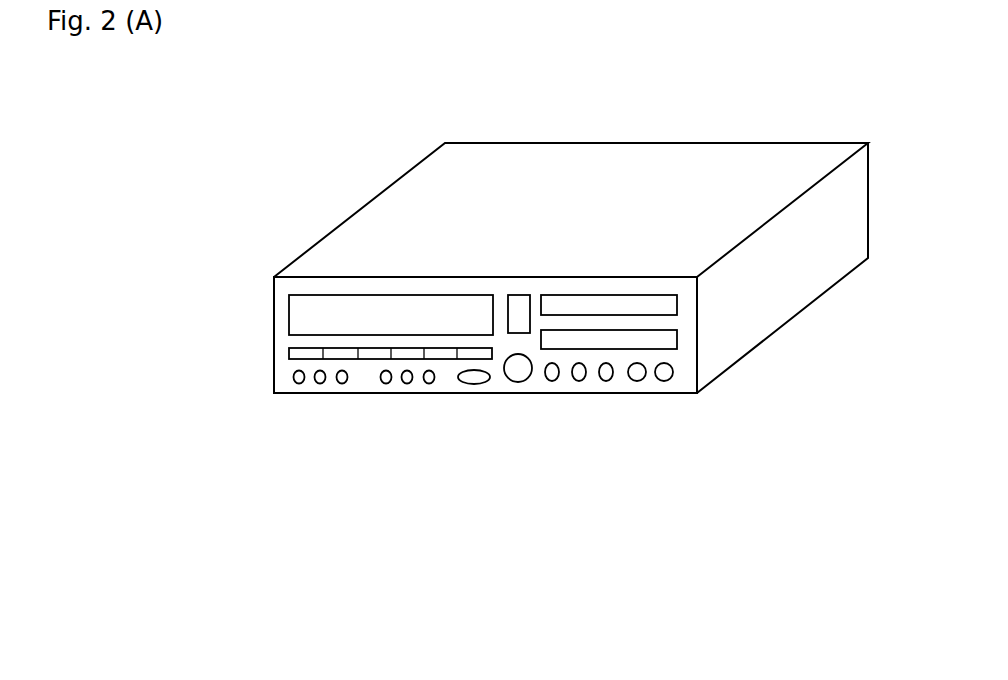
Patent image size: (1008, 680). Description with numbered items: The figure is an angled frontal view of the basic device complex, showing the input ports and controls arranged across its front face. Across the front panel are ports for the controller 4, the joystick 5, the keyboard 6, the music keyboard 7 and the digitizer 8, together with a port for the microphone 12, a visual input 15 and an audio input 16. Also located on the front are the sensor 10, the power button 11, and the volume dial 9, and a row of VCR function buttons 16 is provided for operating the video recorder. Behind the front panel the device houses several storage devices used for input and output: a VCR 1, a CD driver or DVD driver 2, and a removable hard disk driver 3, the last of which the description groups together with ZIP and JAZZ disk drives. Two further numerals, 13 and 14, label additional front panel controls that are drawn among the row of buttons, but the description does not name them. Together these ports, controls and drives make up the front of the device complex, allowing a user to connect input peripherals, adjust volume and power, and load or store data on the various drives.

The VCR 1 is at (487, 264).
The CD driver or DVD driver 2 is at (608, 303).
The removable hard disk driver 3 is at (630, 340).
The controller port 4 is at (672, 378).
The joystick port 5 is at (644, 379).
The keyboard port 6 is at (607, 380).
The music keyboard port 7 is at (583, 395).
The digitizer port 8 is at (552, 400).
The volume dial 9 is at (519, 400).
The sensor 10 is at (310, 307).
The power button 11 is at (471, 400).
The microphone port 12 is at (429, 392).
The operation button 13 is at (382, 393).
The operation buttons 14 is at (340, 392).
The visual input port 15 is at (297, 386).
The audio input port and VCR function buttons 16 is at (293, 353).